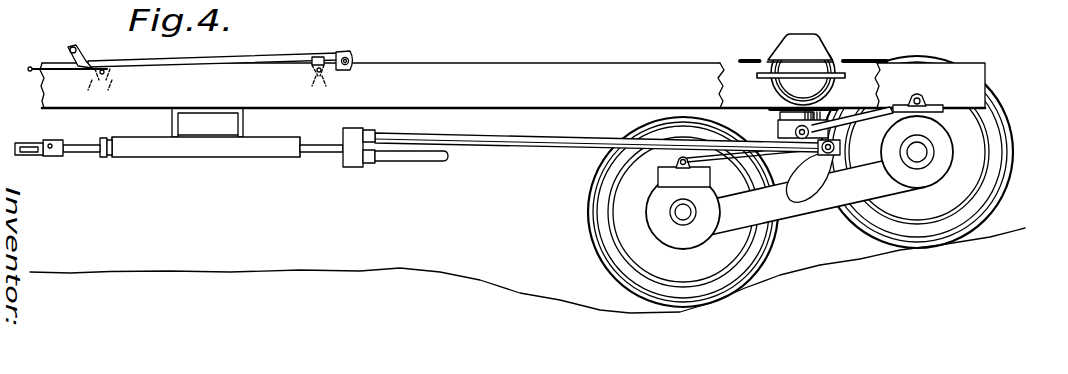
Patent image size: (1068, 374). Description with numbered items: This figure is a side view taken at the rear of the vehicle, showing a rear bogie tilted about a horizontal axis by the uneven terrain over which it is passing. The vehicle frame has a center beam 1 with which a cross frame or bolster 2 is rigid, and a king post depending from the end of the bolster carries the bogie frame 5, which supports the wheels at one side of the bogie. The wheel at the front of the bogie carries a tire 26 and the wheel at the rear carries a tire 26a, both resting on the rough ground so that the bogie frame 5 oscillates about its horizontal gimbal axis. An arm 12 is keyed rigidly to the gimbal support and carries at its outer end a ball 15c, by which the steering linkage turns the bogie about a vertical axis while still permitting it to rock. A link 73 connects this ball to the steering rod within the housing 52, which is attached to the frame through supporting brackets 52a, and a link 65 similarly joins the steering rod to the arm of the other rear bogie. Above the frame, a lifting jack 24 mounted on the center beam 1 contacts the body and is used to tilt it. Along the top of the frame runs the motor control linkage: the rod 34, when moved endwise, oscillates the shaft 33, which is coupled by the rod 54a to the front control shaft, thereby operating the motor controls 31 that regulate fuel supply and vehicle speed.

The center beam 1 is at (594, 66).
The cross frame or bolster 2 is at (872, 62).
The bogie frame 5 is at (788, 212).
The arm 12 is at (806, 200).
The ball 15c is at (830, 158).
The lifting jack 24 is at (813, 48).
The tire 26 is at (714, 273).
The tire 26a is at (958, 215).
The motor controls 31 is at (326, 80).
The shaft 33 is at (350, 58).
The rod 34 is at (29, 69).
The housing 52 is at (273, 152).
The supporting bracket 52a is at (232, 124).
The rod 54a is at (257, 54).
The link 65 is at (421, 161).
The link 73 is at (563, 132).